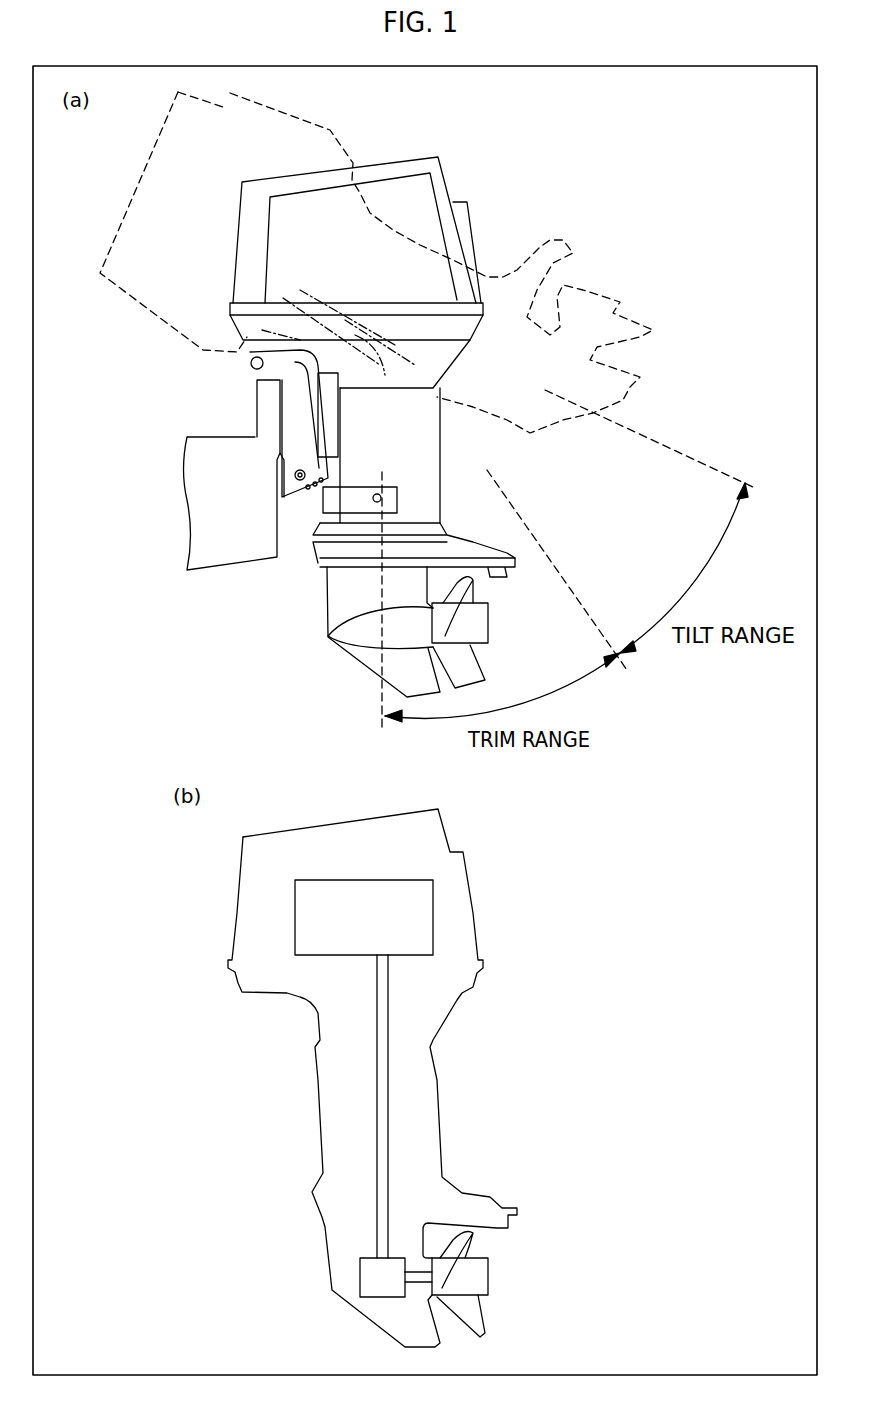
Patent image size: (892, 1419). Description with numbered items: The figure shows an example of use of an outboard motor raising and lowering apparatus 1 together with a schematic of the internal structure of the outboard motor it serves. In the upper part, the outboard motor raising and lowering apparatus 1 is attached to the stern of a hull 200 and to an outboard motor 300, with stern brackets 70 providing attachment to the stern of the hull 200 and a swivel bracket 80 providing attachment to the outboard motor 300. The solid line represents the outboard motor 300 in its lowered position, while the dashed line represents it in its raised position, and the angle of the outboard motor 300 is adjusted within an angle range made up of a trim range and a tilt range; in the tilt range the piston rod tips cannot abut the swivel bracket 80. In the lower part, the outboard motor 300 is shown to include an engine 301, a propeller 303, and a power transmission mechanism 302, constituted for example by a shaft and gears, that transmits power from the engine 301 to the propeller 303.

The outboard motor raising and lowering apparatus 1 is at (300, 500).
The stern bracket 70 is at (300, 408).
The swivel bracket 80 is at (283, 327).
The hull 200 is at (223, 553).
The outboard motor 300 is at (427, 190).
The engine 301 is at (427, 913).
The power transmission mechanism 302 is at (390, 1137).
The propeller 303 is at (480, 1273).